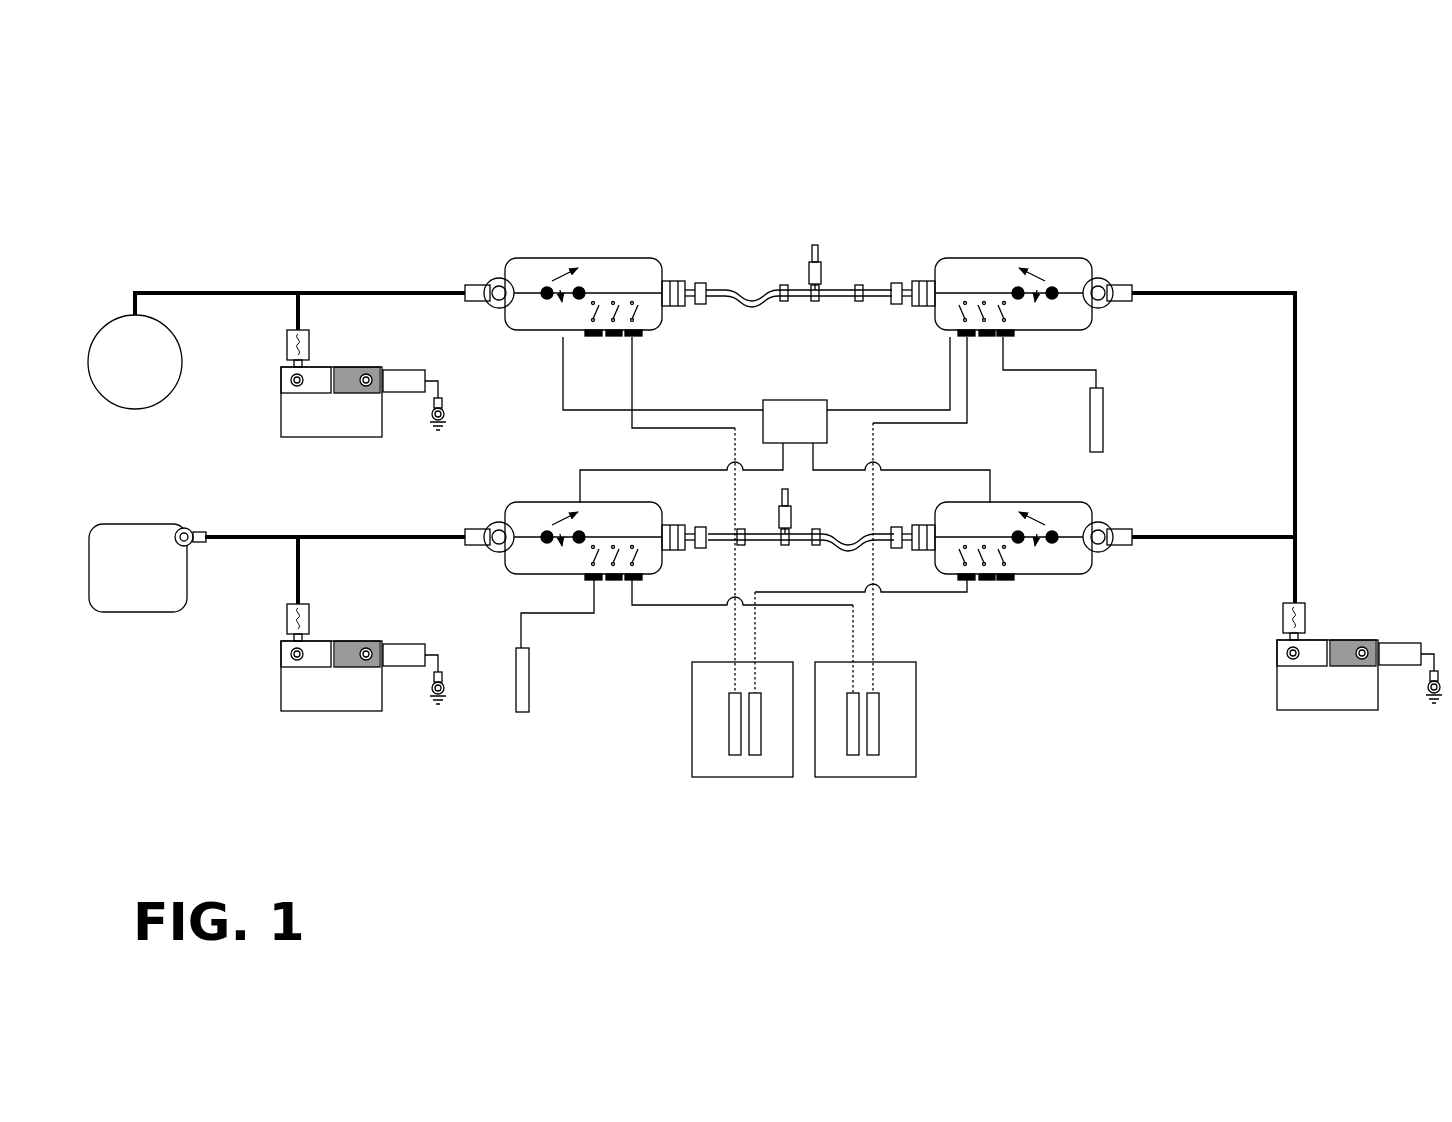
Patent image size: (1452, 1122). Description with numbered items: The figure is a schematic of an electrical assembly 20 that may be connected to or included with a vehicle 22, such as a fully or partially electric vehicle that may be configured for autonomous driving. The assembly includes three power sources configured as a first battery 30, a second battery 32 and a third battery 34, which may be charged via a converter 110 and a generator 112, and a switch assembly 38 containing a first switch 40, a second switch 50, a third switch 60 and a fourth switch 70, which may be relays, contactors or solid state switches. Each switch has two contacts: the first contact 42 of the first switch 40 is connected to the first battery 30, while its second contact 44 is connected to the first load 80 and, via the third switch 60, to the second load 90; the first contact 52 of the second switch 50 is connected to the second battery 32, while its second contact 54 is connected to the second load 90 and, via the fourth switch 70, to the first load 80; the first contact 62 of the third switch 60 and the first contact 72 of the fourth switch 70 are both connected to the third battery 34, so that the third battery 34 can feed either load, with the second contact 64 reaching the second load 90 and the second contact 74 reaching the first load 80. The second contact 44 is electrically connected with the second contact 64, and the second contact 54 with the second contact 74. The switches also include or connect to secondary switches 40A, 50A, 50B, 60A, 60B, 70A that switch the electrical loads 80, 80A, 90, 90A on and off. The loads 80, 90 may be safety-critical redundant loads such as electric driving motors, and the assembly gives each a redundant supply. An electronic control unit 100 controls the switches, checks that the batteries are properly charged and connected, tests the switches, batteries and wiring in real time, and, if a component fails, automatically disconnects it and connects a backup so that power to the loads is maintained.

The electrical assembly 20 is at (393, 158).
The vehicle 22 is at (1198, 190).
The first battery 30 is at (327, 440).
The second battery 32 is at (327, 711).
The third battery 34 is at (1325, 712).
The switch assembly 38 is at (794, 200).
The first switch 40 is at (587, 266).
The secondary switch 40A is at (650, 325).
The first contact 42 is at (545, 287).
The second contact 44 is at (581, 287).
The second switch 50 is at (576, 549).
The secondary switch 50A is at (580, 580).
The secondary switch 50B is at (650, 580).
The first contact 52 is at (545, 541).
The second contact 54 is at (577, 542).
The third switch 60 is at (1023, 292).
The secondary switch 60A is at (972, 345).
The secondary switch 60B is at (1027, 320).
The first contact 62 is at (1054, 287).
The second contact 64 is at (1016, 287).
The fourth switch 70 is at (1034, 563).
The secondary switch 70A is at (952, 580).
The first contact 72 is at (1054, 543).
The second contact 74 is at (1020, 543).
The first load 80 is at (728, 778).
The electrical load 80A is at (530, 692).
The second load 90 is at (876, 778).
The electrical load 90A is at (1103, 418).
The electronic control unit 100 is at (797, 400).
The converter 110 is at (140, 612).
The generator 112 is at (108, 412).